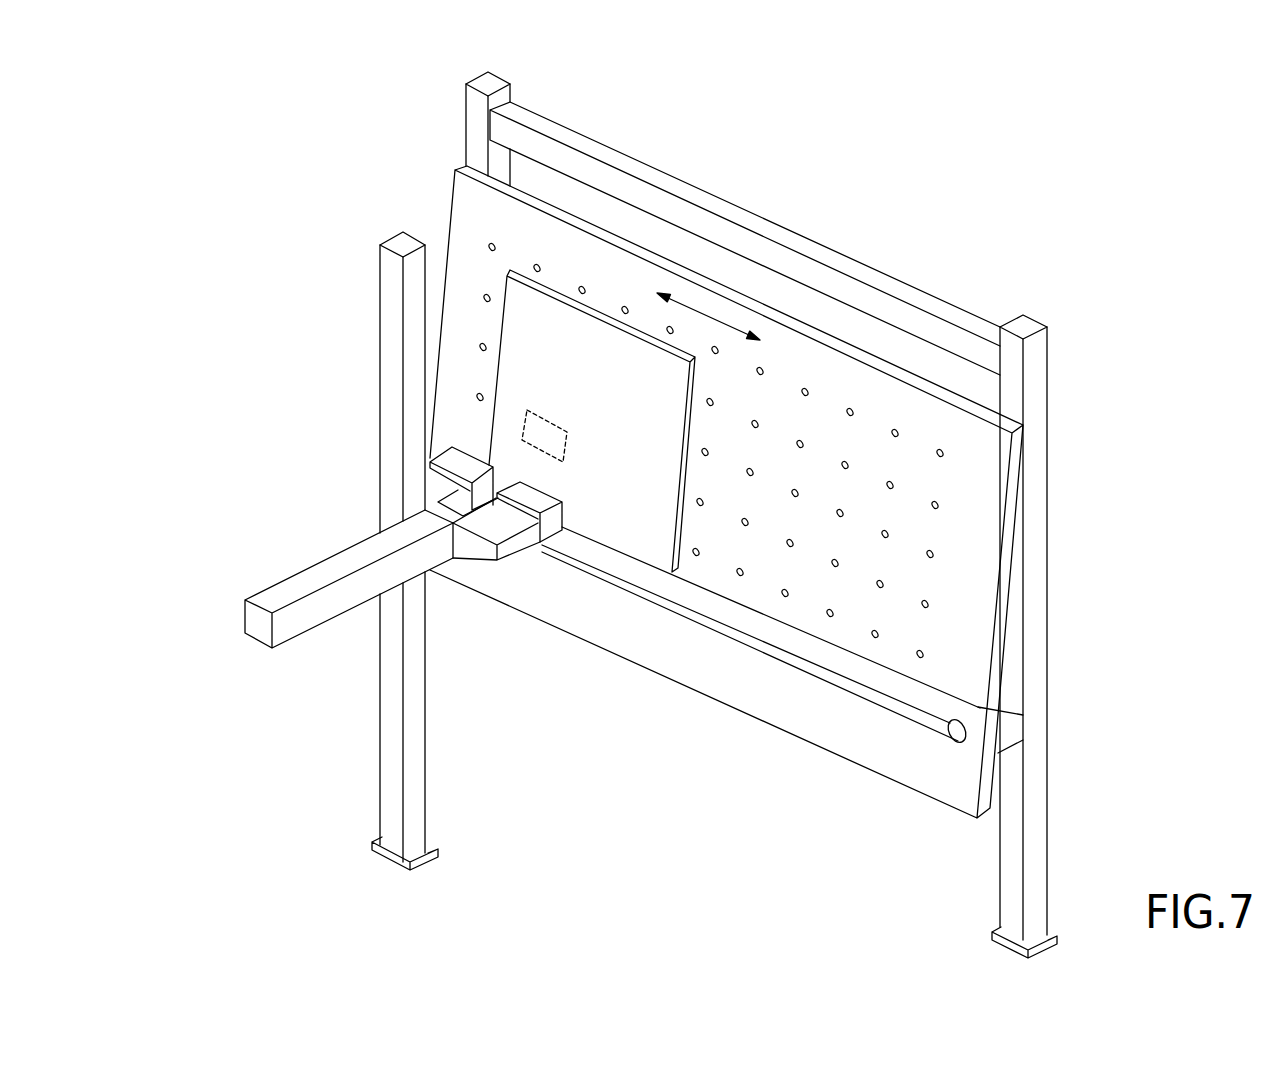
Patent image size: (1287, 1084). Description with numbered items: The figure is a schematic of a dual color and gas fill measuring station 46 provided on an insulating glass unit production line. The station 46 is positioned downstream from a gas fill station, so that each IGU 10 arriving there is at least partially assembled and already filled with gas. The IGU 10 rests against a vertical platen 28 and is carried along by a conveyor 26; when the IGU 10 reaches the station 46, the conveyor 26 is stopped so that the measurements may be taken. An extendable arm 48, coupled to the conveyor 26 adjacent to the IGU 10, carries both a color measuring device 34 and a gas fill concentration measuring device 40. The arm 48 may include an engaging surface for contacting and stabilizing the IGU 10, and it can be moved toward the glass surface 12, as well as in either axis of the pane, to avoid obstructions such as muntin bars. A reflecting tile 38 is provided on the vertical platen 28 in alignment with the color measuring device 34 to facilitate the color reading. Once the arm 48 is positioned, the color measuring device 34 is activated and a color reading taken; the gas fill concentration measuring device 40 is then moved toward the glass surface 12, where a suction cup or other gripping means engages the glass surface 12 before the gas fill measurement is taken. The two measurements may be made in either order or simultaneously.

The IGU 10 is at (636, 498).
The glass surface 12 is at (525, 311).
The conveyor 26 is at (845, 657).
The vertical platen 28 is at (978, 465).
The color measuring device 34 is at (460, 460).
The reflecting tile 38 is at (532, 432).
The gas fill concentration measuring device 40 is at (548, 515).
The dual measuring station 46 is at (283, 274).
The extendable arm 48 is at (423, 552).